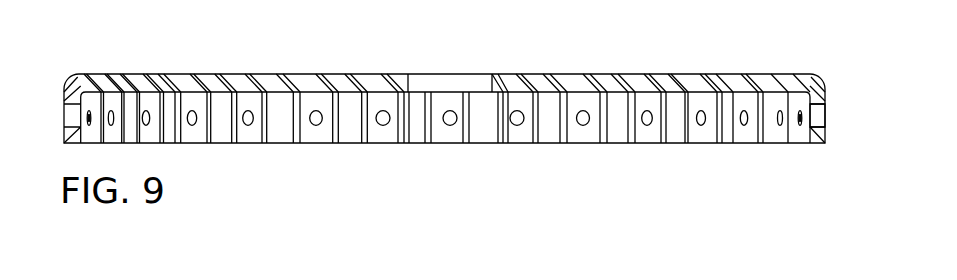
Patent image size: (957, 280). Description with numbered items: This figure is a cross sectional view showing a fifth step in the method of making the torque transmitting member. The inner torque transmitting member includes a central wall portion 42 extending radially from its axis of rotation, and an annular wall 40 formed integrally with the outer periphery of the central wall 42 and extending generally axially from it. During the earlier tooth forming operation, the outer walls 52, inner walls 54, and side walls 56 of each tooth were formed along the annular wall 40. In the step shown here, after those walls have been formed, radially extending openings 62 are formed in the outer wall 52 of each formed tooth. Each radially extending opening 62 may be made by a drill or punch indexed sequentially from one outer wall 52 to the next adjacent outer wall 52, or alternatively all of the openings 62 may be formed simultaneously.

The annular wall 40 is at (827, 134).
The central wall portion 42 is at (662, 73).
The outer walls 52 is at (252, 144).
The inner walls 54 is at (222, 143).
The side walls 56 is at (232, 145).
The radially extending openings 62 is at (247, 108).